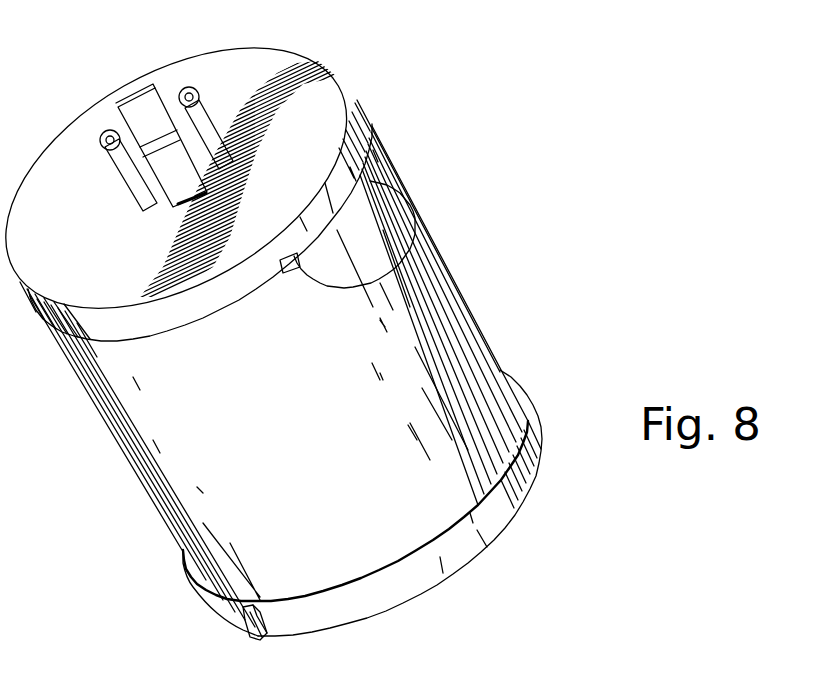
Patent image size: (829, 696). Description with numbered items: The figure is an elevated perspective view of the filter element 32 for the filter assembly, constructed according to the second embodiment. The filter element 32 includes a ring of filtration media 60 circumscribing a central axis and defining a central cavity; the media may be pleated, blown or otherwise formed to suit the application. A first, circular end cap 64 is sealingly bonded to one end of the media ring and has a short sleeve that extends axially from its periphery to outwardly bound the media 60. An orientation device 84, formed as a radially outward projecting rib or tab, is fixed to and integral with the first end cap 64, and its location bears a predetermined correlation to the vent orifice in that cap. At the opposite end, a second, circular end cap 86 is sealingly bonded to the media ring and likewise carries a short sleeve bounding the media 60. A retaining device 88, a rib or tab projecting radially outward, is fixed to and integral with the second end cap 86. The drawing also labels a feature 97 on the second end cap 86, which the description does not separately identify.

The filter element 32 is at (575, 323).
The filtration media 60 is at (217, 480).
The first end cap 64 is at (503, 503).
The orientation device 84 is at (250, 620).
The second end cap 86 is at (368, 128).
The retaining device 88 is at (397, 270).
The electrical terminal 97 is at (140, 113).